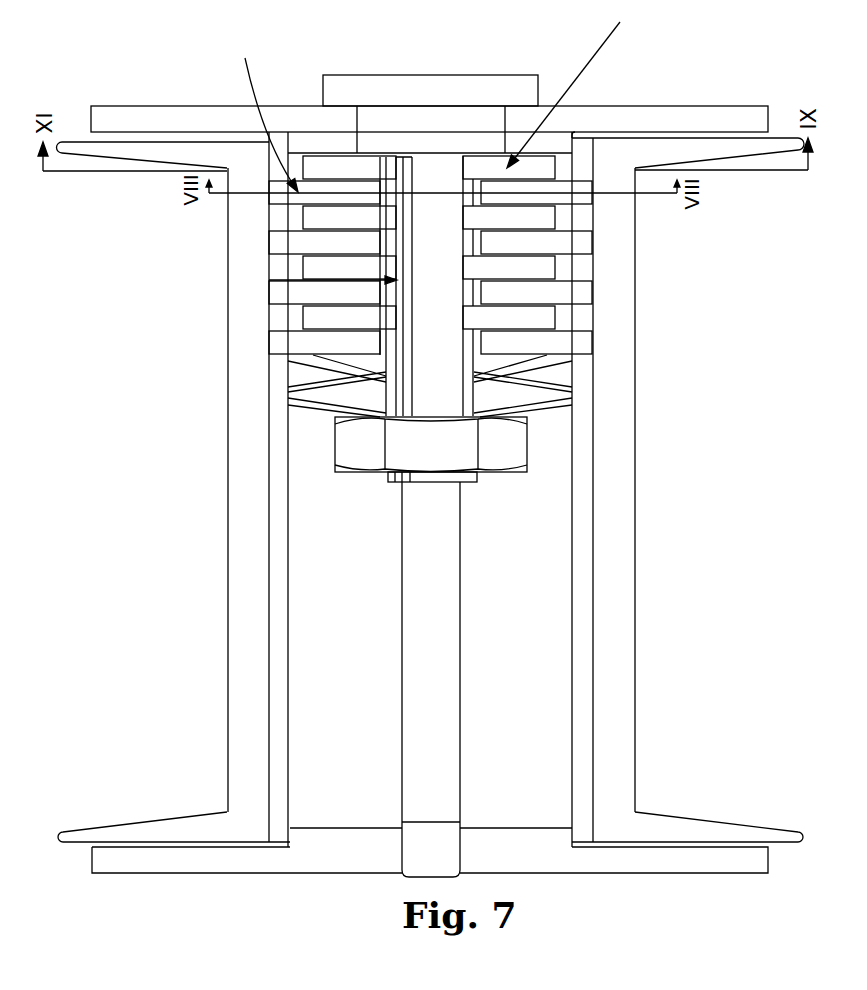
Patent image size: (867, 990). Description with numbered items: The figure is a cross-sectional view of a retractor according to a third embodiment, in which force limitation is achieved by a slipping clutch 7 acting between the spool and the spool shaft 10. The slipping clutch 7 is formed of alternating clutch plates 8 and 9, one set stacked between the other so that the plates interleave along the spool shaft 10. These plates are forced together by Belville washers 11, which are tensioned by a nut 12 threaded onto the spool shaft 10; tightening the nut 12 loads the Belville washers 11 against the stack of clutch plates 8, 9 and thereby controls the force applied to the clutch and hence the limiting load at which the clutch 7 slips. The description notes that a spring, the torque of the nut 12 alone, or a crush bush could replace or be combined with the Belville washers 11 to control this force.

The slipping clutch 7 is at (277, 238).
The clutch plate 8 is at (282, 288).
The clutch plate 9 is at (313, 268).
The spool shaft 10 is at (413, 753).
The Belville washer 11 is at (300, 396).
The nut 12 is at (343, 442).